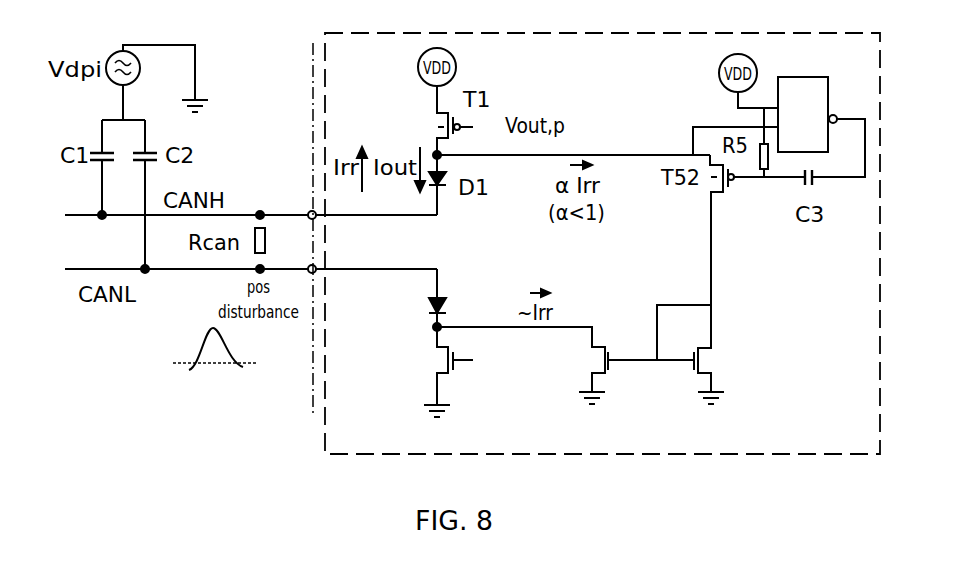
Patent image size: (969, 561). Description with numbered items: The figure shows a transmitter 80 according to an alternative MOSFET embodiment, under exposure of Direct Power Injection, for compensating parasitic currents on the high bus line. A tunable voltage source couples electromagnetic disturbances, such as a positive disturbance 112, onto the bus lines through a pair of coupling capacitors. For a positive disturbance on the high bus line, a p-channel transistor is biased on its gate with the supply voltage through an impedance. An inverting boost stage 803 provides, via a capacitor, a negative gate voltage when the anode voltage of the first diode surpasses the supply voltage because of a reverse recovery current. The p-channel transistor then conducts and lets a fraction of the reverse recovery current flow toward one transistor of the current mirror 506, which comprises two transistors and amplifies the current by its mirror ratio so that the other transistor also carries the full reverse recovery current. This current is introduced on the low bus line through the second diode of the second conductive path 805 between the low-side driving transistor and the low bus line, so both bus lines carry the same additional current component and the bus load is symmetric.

The transmitter 80 is at (602, 454).
The positive disturbance pulse 112 is at (203, 293).
The current mirror 506 is at (708, 303).
The inverting boost stage 803 is at (815, 77).
The second conductive path 805 is at (405, 322).